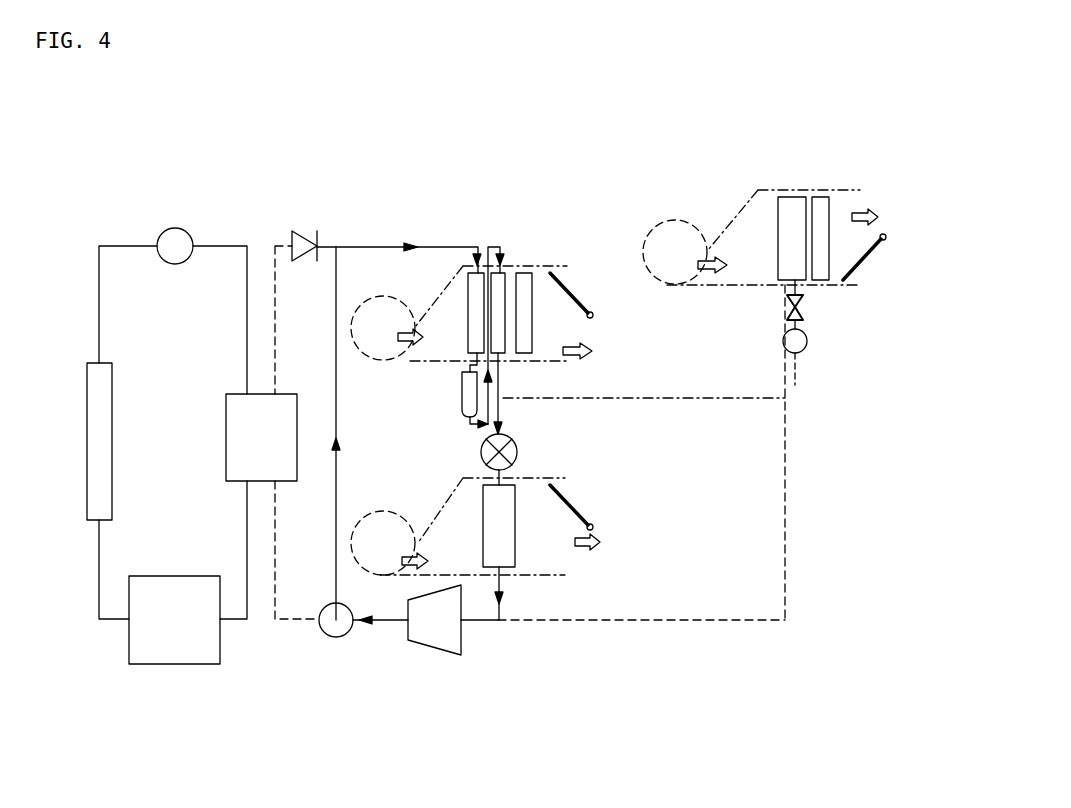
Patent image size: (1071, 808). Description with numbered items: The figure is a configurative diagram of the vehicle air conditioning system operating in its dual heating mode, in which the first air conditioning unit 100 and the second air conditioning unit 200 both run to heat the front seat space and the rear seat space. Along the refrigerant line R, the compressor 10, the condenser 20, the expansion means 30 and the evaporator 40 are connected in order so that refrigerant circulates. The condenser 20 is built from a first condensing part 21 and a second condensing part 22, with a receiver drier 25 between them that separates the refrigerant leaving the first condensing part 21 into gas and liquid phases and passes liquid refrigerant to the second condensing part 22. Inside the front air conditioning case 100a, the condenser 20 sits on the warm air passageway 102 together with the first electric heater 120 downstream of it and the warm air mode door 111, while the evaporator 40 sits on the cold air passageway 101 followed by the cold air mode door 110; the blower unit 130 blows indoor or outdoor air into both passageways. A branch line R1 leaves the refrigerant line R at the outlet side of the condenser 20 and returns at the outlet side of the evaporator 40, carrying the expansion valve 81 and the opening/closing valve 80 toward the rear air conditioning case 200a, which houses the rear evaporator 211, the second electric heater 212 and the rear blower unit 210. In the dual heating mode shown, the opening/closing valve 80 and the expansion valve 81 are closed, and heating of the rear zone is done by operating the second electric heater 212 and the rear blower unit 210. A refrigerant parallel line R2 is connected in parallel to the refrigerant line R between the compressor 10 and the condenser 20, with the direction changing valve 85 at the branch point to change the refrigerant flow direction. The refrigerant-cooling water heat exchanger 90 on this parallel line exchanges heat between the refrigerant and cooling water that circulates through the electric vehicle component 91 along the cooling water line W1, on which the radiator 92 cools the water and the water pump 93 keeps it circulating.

The compressor 10 is at (441, 646).
The condenser 20 is at (501, 252).
The first condensing part 21 is at (477, 245).
The second condensing part 22 is at (507, 270).
The receiver drier 25 is at (462, 416).
The expansion means 30 is at (518, 452).
The evaporator 40 is at (516, 552).
The opening/closing valve 80 is at (808, 340).
The expansion valve 81 is at (806, 310).
The direction changing valve 85 is at (322, 636).
The refrigerant-cooling water heat exchanger 90 is at (226, 462).
The electric vehicle component 91 is at (171, 664).
The radiator 92 is at (112, 413).
The water pump 93 is at (172, 228).
The first air conditioning unit 100 is at (397, 395).
The front air conditioning case 100a is at (460, 482).
The cold air passageway 101 is at (471, 555).
The warm air passageway 102 is at (461, 345).
The cold air mode door 110 is at (578, 523).
The warm air mode door 111 is at (568, 297).
The first electric heater 120 is at (524, 270).
The blower unit 130 is at (383, 296).
The second air conditioning unit 200 is at (764, 194).
The rear air conditioning case 200a is at (743, 208).
The rear blower unit 210 is at (675, 220).
The rear evaporator 211 is at (792, 197).
The second electric heater 212 is at (820, 197).
The refrigerant line R is at (387, 622).
The branch line R1 is at (787, 418).
The refrigerant parallel line R2 is at (275, 545).
The cooling water line W1 is at (98, 306).